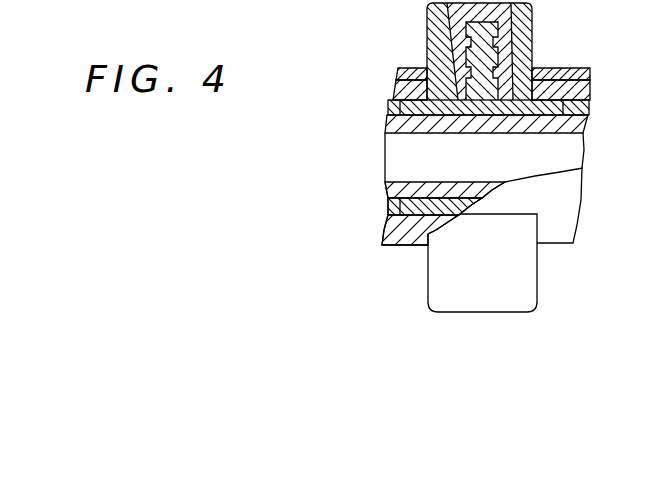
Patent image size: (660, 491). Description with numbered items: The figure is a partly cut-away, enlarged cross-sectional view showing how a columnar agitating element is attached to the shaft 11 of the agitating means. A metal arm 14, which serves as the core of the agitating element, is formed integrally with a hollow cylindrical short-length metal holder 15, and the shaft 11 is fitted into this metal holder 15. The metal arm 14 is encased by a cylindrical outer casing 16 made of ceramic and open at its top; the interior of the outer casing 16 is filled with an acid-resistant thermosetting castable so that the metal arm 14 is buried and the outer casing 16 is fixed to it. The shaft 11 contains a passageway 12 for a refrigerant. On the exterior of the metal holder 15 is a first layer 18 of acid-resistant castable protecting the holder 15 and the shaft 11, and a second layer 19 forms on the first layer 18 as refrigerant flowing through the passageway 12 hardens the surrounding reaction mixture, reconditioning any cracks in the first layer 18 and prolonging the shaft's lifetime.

The shaft 11 is at (514, 114).
The passageway 12 is at (513, 189).
The metal arm 14 is at (521, 50).
The hollow cylindrical short-length metal holder 15 is at (459, 88).
The cylindrical outer casing 16 is at (457, 50).
The first layer 18 is at (517, 79).
The second layer 19 is at (499, 49).